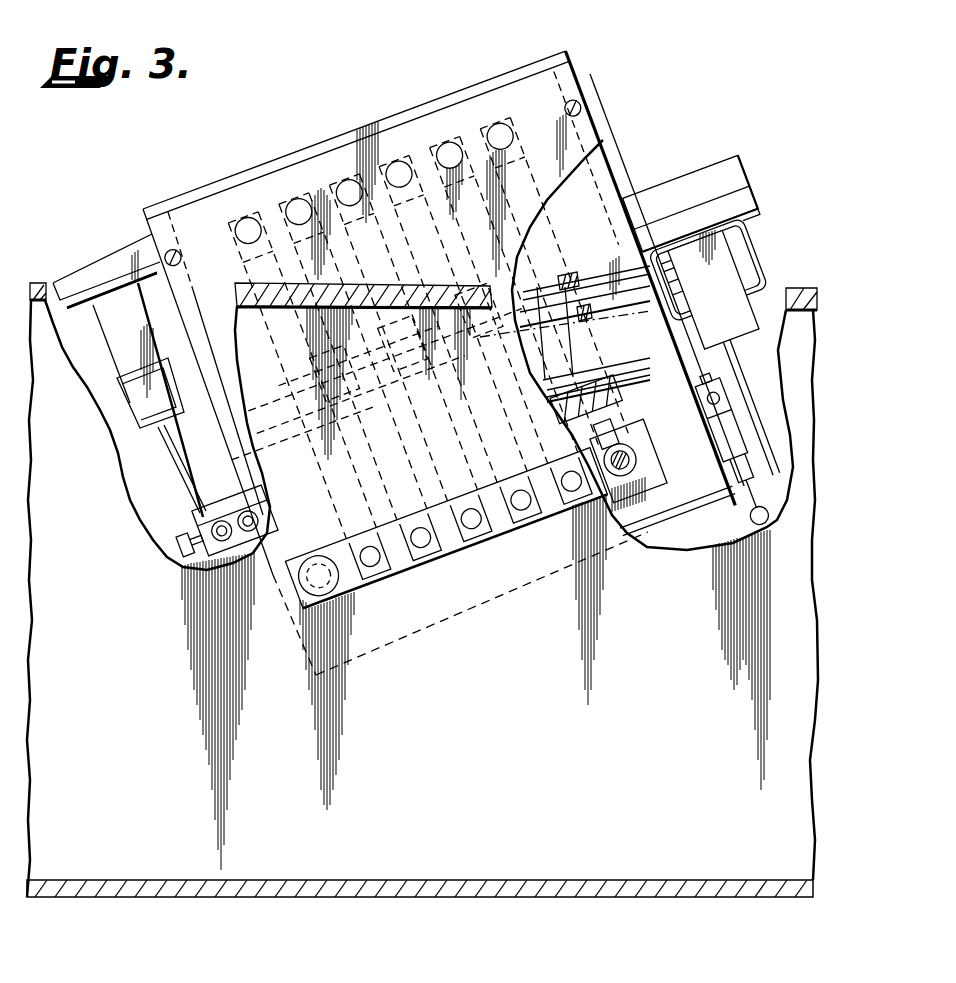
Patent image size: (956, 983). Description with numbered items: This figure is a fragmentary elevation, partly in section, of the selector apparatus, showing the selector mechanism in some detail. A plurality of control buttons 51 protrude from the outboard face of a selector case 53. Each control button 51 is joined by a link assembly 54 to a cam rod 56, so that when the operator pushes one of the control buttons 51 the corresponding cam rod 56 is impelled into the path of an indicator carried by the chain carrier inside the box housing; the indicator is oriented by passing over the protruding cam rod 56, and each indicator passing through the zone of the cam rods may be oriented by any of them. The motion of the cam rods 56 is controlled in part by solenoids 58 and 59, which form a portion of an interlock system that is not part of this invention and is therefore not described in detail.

The control buttons 51 is at (293, 200).
The selector case 53 is at (395, 115).
The link assembly 54 is at (547, 260).
The cam rod 56 is at (430, 556).
The solenoid 58 is at (718, 280).
The solenoid 59 is at (153, 338).